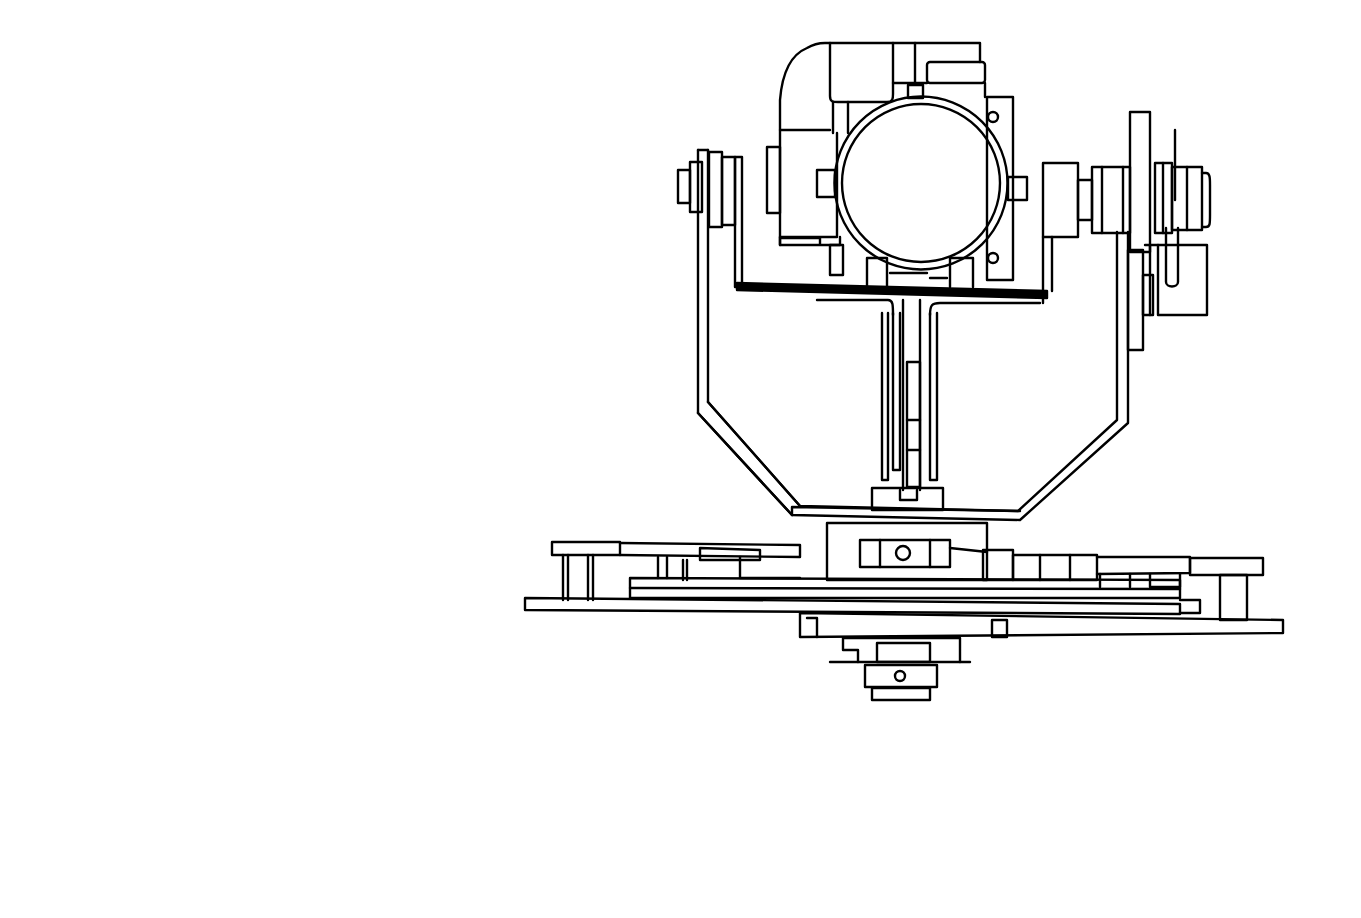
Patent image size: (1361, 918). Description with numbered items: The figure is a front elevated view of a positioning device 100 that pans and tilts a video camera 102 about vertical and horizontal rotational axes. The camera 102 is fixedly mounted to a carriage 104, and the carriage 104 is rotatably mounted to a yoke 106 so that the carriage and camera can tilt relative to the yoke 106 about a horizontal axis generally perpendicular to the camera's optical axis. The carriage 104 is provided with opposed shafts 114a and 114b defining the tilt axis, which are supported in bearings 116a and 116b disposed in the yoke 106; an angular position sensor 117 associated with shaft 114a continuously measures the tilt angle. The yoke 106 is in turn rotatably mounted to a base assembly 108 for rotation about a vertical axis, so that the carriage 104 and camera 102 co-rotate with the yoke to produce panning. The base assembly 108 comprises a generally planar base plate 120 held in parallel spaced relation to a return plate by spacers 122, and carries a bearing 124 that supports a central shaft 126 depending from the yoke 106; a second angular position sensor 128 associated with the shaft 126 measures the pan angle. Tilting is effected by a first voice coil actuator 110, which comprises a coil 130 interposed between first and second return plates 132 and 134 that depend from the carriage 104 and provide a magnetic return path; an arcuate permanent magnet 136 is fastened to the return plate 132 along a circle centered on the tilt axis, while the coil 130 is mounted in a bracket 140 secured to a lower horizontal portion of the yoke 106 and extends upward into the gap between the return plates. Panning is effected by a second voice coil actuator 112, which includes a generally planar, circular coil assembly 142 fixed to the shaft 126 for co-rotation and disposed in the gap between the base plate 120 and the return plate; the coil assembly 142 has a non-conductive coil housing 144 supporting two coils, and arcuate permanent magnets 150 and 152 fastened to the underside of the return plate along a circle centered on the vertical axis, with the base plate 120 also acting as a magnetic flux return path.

The positioning device 100 is at (262, 794).
The video camera 102 is at (982, 90).
The carriage 104 is at (777, 287).
The yoke 106 is at (1126, 373).
The base assembly 108 is at (610, 543).
The first voice coil actuator 110 is at (893, 398).
The second voice coil actuator 112 is at (1168, 560).
The shaft 114a is at (1157, 170).
The shaft 114b is at (678, 185).
The bearing 116a is at (1155, 160).
The bearing 116b is at (735, 155).
The angular position sensor 117 is at (1253, 183).
The base plate 120 is at (610, 613).
The spacers 122 is at (1250, 597).
The bearing 124 is at (867, 587).
The central shaft 126 is at (1098, 557).
The second angular position sensor 128 is at (940, 667).
The coil 130 is at (883, 450).
The first return plate 132 is at (935, 400).
The second return plate 134 is at (883, 378).
The arcuate permanent magnet 136 is at (890, 410).
The bracket 140 is at (700, 397).
The coil assembly 142 is at (1167, 603).
The coil housing 144 is at (1093, 613).
The arcuate permanent magnet 150 is at (710, 543).
The arcuate permanent magnet 152 is at (1121, 557).